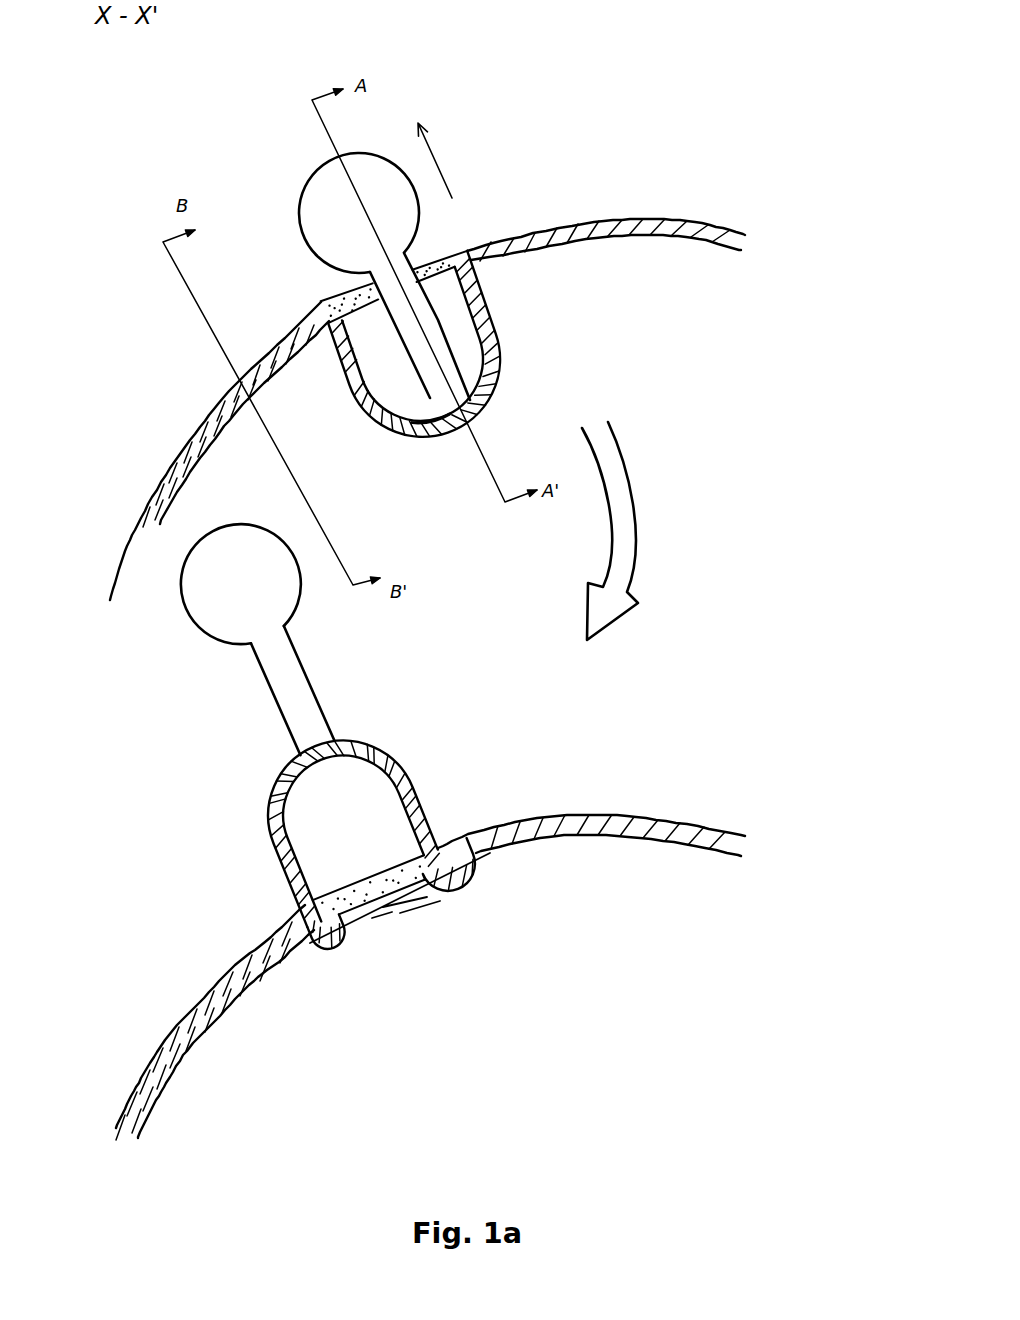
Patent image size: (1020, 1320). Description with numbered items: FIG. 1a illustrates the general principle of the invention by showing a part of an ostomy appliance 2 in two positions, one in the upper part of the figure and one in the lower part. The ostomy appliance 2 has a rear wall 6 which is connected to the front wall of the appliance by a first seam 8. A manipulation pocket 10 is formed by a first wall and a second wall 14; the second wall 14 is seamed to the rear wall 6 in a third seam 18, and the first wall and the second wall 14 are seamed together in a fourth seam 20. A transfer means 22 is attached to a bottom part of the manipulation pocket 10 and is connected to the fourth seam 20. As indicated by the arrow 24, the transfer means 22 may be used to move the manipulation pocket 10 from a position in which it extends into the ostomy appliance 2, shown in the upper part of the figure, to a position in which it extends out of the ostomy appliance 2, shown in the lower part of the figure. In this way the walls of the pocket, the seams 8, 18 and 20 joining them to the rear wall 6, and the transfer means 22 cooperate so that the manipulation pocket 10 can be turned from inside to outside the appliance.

The ostomy appliance 2 is at (657, 273).
The rear wall 6 is at (695, 287).
The first seam 8 is at (565, 223).
The manipulation pocket 10 is at (510, 368).
The second wall 14 is at (392, 392).
The third seam 18 is at (437, 253).
The fourth seam 20 is at (493, 308).
The transfer means 22 is at (363, 170).
The arrow 24 is at (440, 158).